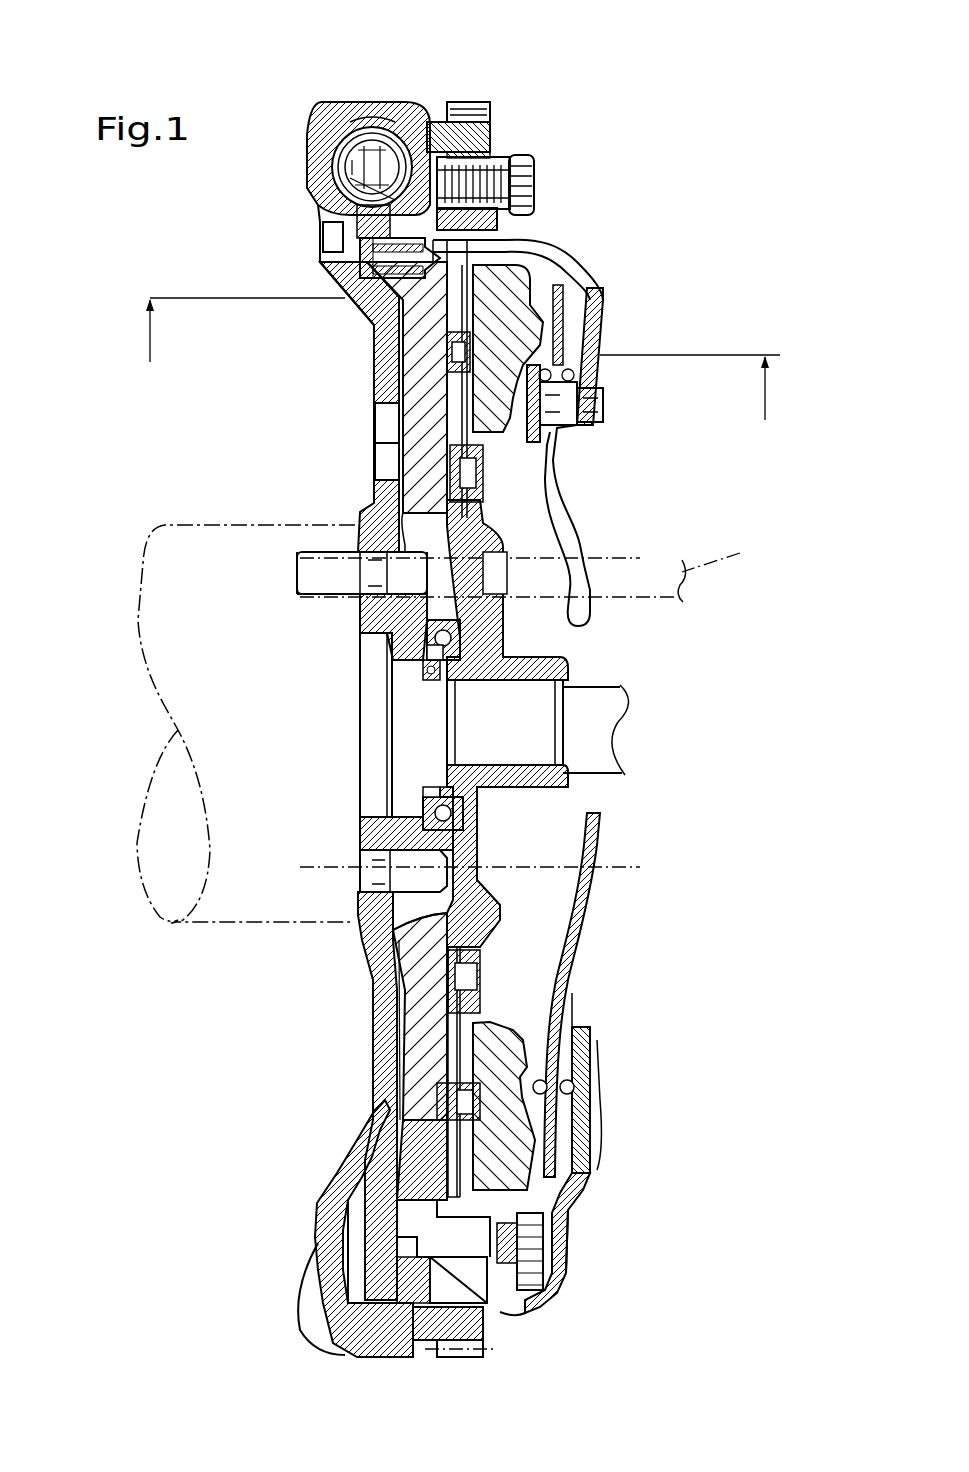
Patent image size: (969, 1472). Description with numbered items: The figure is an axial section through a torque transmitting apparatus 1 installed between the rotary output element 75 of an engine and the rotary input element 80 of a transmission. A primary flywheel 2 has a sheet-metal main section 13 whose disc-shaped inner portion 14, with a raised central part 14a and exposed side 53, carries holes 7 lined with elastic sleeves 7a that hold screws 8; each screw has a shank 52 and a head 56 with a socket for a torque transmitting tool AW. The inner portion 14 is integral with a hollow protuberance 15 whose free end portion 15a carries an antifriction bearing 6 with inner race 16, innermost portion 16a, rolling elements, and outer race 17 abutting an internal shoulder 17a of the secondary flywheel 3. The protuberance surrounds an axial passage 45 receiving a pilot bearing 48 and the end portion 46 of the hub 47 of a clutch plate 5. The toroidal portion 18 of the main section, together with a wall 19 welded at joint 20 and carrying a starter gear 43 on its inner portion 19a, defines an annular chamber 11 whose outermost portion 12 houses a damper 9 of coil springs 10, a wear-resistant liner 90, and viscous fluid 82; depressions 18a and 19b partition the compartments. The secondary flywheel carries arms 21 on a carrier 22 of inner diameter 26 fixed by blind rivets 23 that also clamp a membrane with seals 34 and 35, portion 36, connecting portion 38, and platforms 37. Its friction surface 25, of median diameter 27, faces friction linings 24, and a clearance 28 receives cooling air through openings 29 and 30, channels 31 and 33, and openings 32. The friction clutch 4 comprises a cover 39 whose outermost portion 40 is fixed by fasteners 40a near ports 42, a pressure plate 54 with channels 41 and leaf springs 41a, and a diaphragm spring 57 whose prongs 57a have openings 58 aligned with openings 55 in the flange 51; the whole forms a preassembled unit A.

The torque transmitting apparatus 1 is at (508, 100).
The primary flywheel 2 is at (368, 508).
The secondary flywheel 3 is at (425, 1018).
The friction clutch 4 is at (585, 1060).
The clutch plate 5 is at (505, 928).
The antifriction roller bearing 6 is at (425, 645).
The holes 7 is at (365, 592).
The elastic sleeves 7a is at (400, 613).
The screws 8 is at (308, 578).
The damper 9 is at (350, 154).
The coil springs 10 is at (340, 172).
The annular chamber 11 is at (380, 1220).
The toroidal radially outermost portion 12 is at (348, 197).
The main section 13 is at (378, 393).
The disc-shaped radially inner portion 14 is at (383, 398).
The raised central part 14a is at (375, 912).
The hollow axial protuberance 15 is at (405, 822).
The free end portion 15a is at (425, 658).
The inner race 16 is at (420, 810).
The radially innermost portion 16a is at (420, 793).
The outer race 17 is at (505, 618).
The internal shoulder 17a is at (492, 810).
The toroidal portion 18 is at (326, 137).
The depressions 18a is at (330, 1300).
The wall 19 is at (486, 108).
The radially inner portion 19a is at (480, 166).
The depressions 19b is at (432, 1350).
The welded joint 20 is at (306, 126).
The torque transmitting arms 21 is at (395, 1268).
The ring-shaped carrier 22 is at (328, 286).
The blind rivets 23 is at (338, 262).
The friction linings 24 is at (560, 332).
The friction surface 25 is at (400, 1112).
The inner diameter 26 is at (238, 362).
The diameter 27 is at (690, 415).
The clearance 28 is at (375, 1070).
The openings 29 is at (440, 545).
The openings 30 is at (388, 462).
The channels 31 is at (380, 1145).
The openings 32 is at (560, 1232).
The groove 33 is at (380, 978).
The seal 34 is at (378, 345).
The sealing element 35 is at (505, 216).
The membrane portion 36 is at (598, 285).
The platforms 37 is at (520, 234).
The membrane connecting portion 38 is at (540, 205).
The clutch cover 39 is at (600, 1150).
The radially outermost portion 40 is at (532, 178).
The fasteners 40a is at (522, 196).
The channels 41 is at (560, 1256).
The leaf springs 41a is at (488, 1303).
The ports 42 is at (562, 1288).
The starter gear 43 is at (470, 143).
The axial passage 45 is at (415, 740).
The end portion 46 is at (567, 776).
The hub 47 is at (560, 672).
The pilot bearing 48 is at (428, 680).
The flange 51 is at (470, 830).
The shank 52 is at (400, 856).
The exposed side 53 is at (360, 935).
The pressure plate 54 is at (577, 1032).
The openings 55 is at (503, 580).
The head 56 is at (500, 870).
The diaphragm spring 57 is at (597, 325).
The prongs 57a is at (580, 505).
The openings 58 is at (487, 556).
The rotary output element 75 is at (140, 607).
The rotary input element 80 is at (563, 730).
The viscous fluid 82 is at (375, 1326).
The wear-resistant liner 90 is at (383, 118).
The preassembled unit A is at (549, 1304).
The torque transmitting tool AW is at (550, 566).